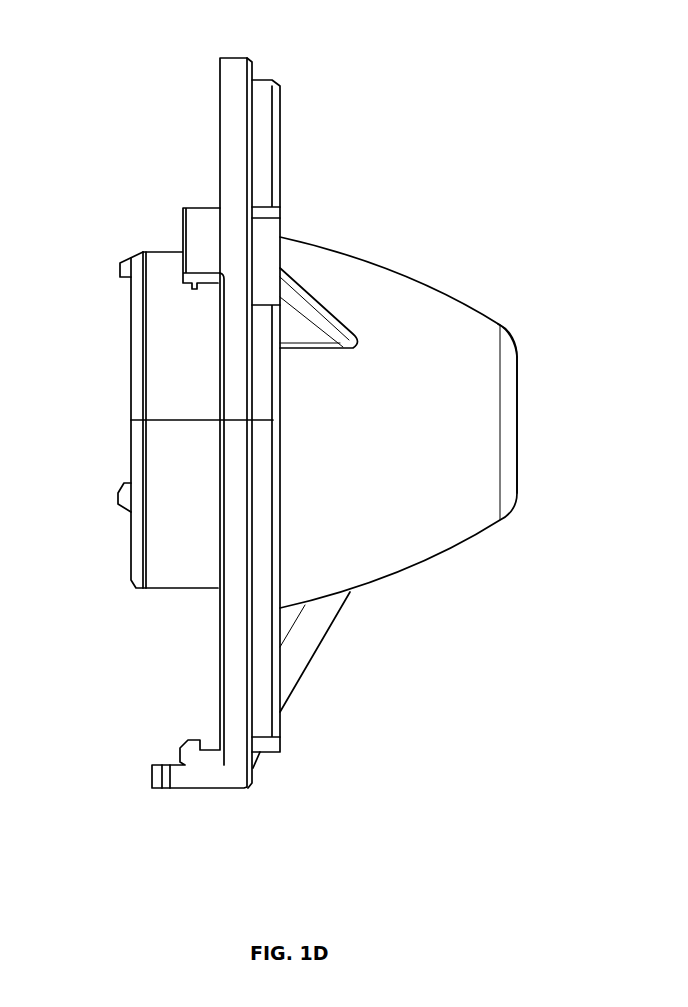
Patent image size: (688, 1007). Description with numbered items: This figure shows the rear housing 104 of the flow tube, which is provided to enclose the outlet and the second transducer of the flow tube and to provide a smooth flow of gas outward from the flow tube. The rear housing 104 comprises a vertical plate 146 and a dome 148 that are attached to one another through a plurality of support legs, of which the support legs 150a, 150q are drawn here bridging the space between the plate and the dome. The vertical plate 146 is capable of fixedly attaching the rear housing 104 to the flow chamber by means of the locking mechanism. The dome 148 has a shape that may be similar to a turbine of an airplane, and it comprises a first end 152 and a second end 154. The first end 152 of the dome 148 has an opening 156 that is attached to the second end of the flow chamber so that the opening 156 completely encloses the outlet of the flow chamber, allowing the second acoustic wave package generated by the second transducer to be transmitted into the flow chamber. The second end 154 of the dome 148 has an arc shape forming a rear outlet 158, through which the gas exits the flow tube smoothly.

The rear housing 104 is at (88, 30).
The vertical plate 146 is at (280, 138).
The dome 148 is at (413, 431).
The support leg 150a is at (358, 336).
The support leg 150q is at (322, 643).
The first end 152 is at (144, 251).
The second end 154 is at (507, 321).
The opening 156 is at (132, 347).
The rear outlet 158 is at (518, 430).